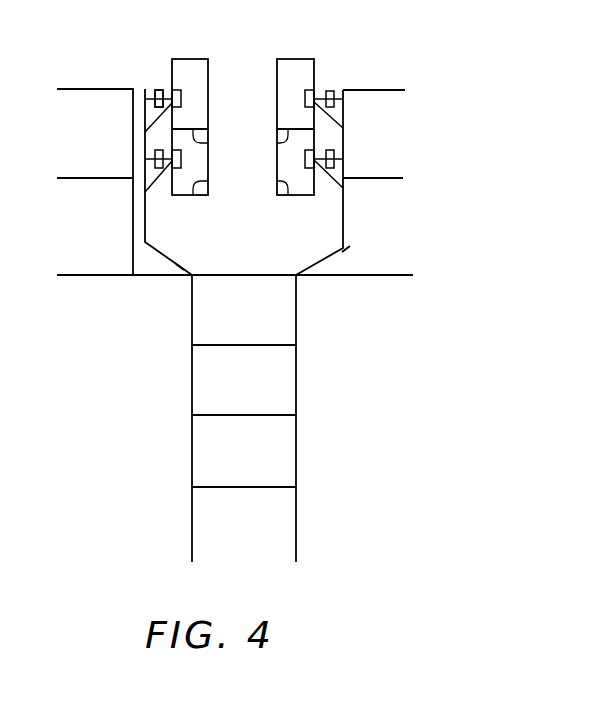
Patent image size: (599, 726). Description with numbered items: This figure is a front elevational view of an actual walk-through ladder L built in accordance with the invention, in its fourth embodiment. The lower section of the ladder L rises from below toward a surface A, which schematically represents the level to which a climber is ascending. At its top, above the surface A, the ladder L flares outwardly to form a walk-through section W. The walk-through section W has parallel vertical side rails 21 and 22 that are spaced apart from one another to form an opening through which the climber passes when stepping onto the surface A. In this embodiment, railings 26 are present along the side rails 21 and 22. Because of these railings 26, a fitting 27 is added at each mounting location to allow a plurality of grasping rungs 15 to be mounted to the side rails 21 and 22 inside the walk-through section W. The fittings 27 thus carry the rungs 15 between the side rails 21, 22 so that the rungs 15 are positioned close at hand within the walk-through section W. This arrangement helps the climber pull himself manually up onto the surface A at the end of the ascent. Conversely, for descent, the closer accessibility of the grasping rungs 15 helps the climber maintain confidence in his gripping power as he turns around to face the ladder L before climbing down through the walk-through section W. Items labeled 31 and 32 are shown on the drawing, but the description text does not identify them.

The rungs 15 is at (293, 59).
The side rail 21 is at (145, 232).
The side rail 22 is at (343, 222).
The railings 26 is at (82, 90).
The fitting 27 is at (157, 110).
The nut 31 is at (155, 89).
The clip 32 is at (177, 90).
The walk-through section W is at (178, 264).
The surface A is at (70, 275).
The ladder L is at (191, 502).